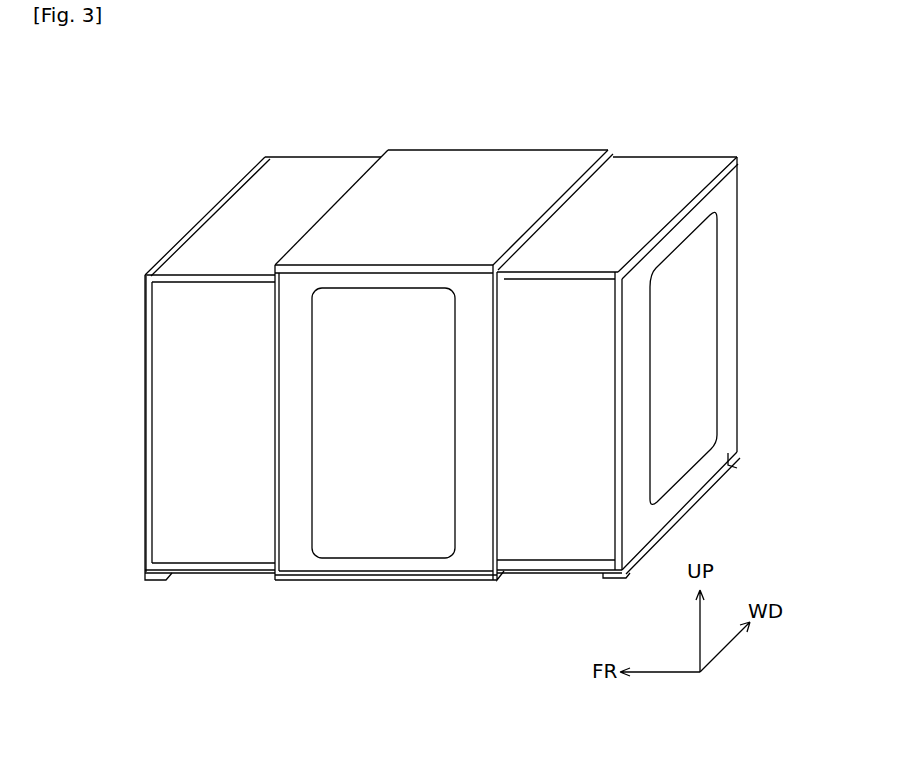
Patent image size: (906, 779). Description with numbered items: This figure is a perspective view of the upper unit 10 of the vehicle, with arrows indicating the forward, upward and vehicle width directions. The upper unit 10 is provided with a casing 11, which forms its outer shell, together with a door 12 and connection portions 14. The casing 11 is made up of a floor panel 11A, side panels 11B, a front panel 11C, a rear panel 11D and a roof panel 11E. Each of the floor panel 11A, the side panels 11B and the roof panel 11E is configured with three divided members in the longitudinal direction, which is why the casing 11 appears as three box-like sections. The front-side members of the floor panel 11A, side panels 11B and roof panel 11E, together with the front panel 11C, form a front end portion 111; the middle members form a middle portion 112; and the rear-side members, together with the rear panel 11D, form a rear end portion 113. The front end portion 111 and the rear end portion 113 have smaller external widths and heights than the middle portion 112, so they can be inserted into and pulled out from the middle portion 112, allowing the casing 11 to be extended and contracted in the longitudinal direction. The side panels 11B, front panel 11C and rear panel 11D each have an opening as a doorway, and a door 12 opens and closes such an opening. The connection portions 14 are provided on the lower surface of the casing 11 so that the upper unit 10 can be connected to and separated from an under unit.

The upper unit 10 is at (169, 178).
The casing 11 is at (732, 91).
The front end portion 111 is at (356, 157).
The middle portion 112 is at (557, 150).
The rear end portion 113 is at (703, 157).
The floor panel 11A is at (208, 573).
The side panels 11B is at (255, 563).
The front panel 11C is at (145, 373).
The rear panel 11D is at (733, 341).
The roof panel 11E is at (320, 157).
The door 12 is at (703, 298).
The connection portions 14 is at (158, 581).